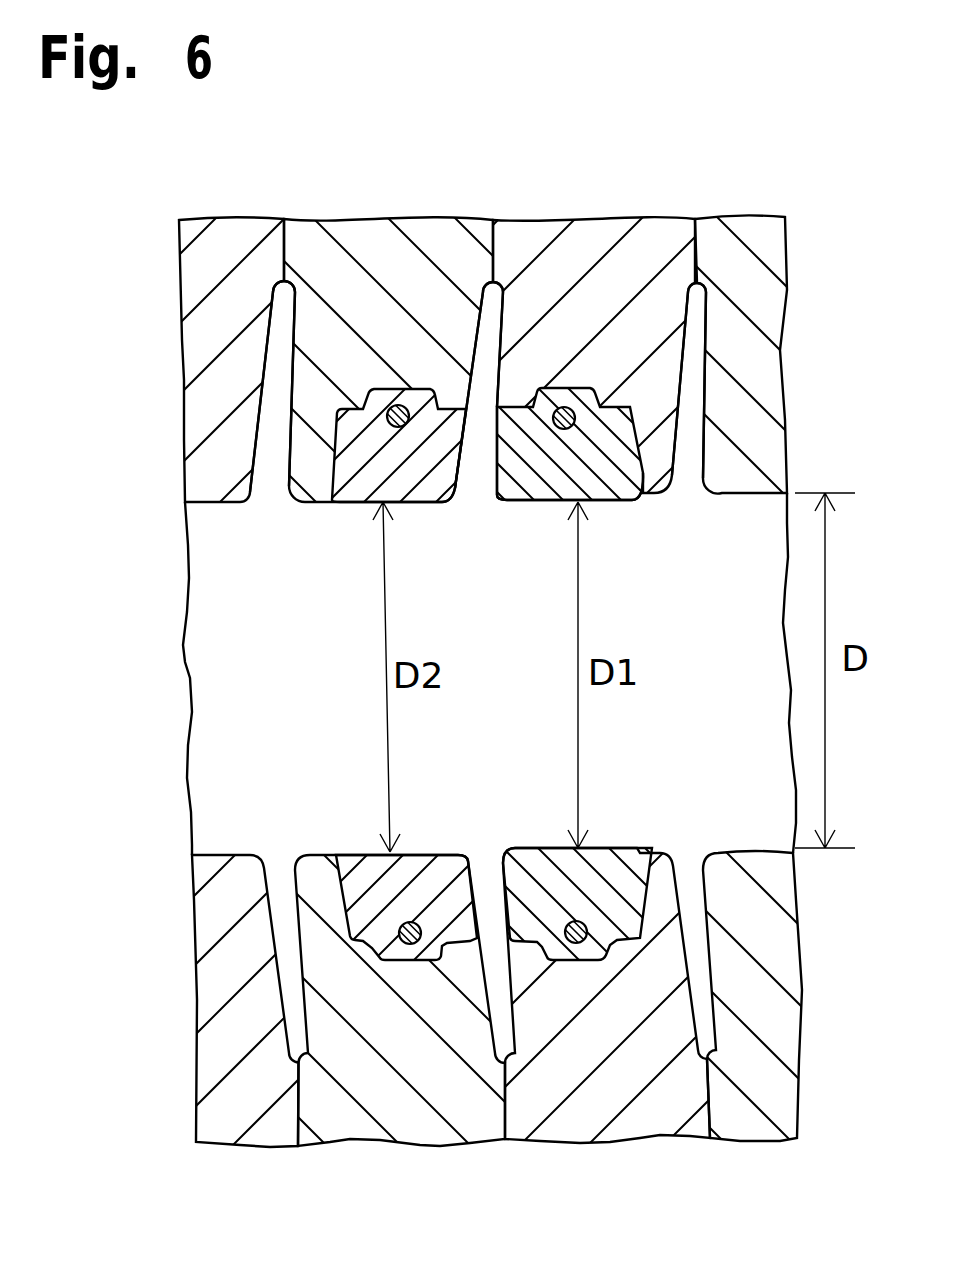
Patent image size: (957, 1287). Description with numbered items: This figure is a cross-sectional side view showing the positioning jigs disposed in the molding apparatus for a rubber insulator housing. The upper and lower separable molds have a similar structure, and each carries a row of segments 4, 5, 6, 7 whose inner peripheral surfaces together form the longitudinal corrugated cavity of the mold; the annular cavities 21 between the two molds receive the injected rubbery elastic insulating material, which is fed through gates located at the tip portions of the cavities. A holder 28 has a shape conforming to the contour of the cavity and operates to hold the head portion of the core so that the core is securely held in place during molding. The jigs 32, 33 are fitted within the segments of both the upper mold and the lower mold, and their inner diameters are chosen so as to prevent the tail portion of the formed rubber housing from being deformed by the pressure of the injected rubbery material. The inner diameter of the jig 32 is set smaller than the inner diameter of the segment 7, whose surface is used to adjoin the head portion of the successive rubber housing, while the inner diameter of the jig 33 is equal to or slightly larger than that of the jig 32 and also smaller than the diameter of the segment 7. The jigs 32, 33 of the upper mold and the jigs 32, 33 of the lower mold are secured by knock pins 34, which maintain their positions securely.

The segment 4 is at (228, 232).
The segment 5 is at (375, 235).
The segment 6 is at (600, 233).
The segment 7 is at (750, 233).
The annular cavity 21 is at (702, 458).
The holder 28 is at (284, 462).
The jig 32 is at (525, 492).
The jig 33 is at (423, 497).
The knock pin 34 is at (573, 925).